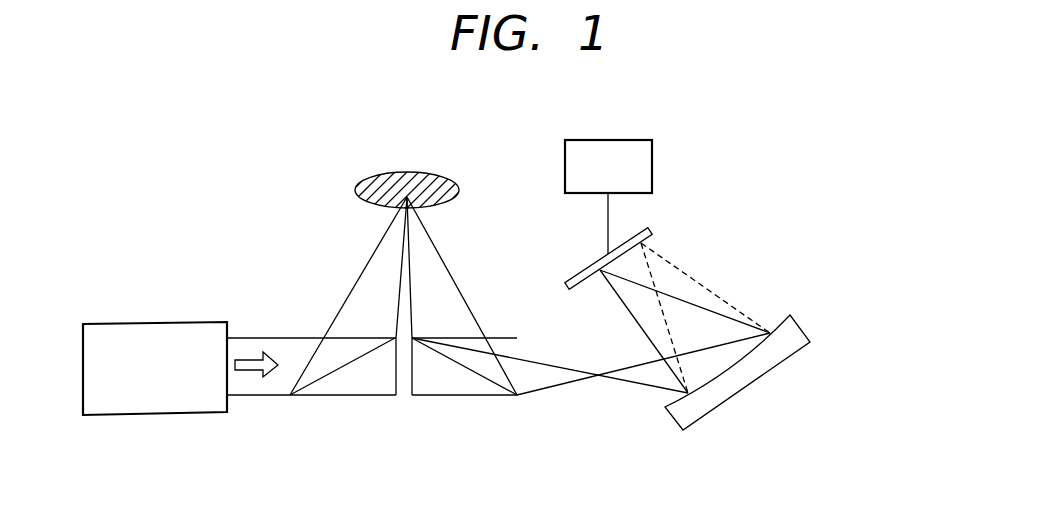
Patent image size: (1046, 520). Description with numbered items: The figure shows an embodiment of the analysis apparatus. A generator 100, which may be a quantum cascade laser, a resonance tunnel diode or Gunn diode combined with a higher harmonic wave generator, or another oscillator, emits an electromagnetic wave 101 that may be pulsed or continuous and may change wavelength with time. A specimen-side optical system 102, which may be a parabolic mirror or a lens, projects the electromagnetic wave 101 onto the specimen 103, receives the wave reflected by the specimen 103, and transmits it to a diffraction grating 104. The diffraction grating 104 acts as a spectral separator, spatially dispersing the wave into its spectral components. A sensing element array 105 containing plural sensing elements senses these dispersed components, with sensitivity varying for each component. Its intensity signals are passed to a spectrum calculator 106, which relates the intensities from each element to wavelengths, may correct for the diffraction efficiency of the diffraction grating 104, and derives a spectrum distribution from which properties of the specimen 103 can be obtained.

The generator 100 is at (105, 332).
The electromagnetic wave 101 is at (267, 333).
The specimen-side optical system 102 is at (362, 397).
The specimen 103 is at (392, 172).
The diffraction grating 104 is at (762, 377).
The sensing element array 105 is at (653, 230).
The spectrum calculator 106 is at (622, 140).